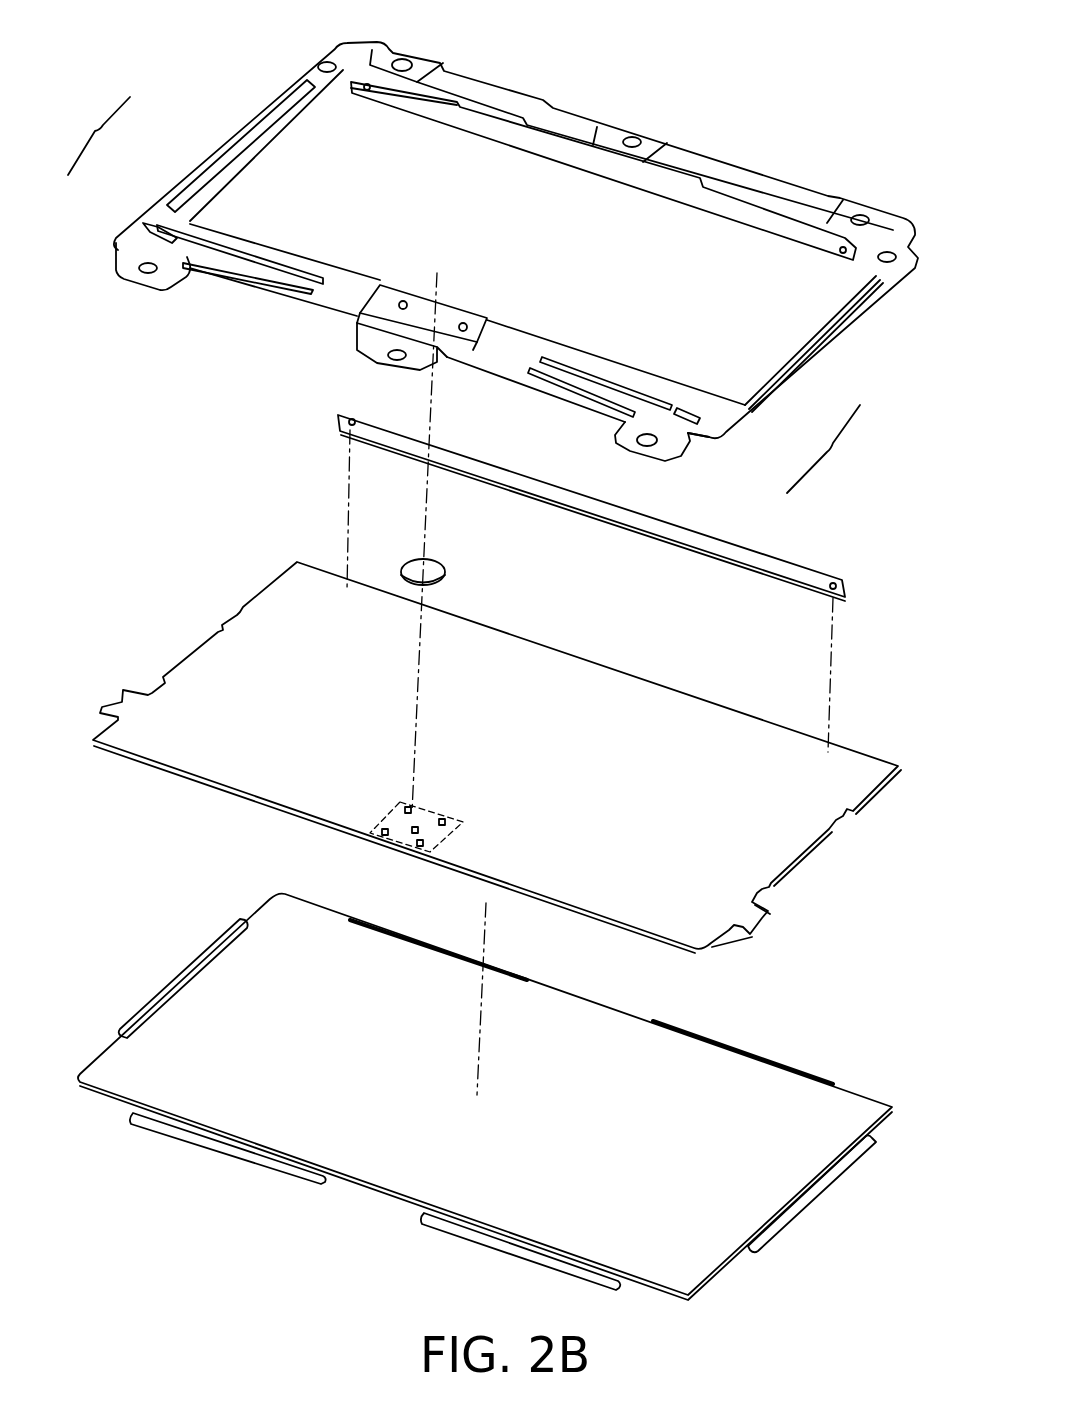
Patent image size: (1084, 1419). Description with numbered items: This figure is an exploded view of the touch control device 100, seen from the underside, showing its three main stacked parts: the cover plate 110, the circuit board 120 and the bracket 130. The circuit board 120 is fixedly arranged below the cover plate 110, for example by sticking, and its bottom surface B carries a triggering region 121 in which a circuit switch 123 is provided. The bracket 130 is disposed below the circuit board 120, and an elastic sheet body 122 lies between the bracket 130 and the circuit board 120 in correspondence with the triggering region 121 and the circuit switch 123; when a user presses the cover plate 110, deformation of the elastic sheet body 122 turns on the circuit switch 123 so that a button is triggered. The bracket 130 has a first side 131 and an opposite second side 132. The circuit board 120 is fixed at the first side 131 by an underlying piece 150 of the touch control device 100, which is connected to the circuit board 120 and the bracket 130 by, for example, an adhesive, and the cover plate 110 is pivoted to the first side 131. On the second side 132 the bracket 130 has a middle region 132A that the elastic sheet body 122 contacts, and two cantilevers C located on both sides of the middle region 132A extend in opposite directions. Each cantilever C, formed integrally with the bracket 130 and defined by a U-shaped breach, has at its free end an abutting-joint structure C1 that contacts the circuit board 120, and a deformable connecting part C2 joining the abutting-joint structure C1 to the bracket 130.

The touch control device 100 is at (929, 1306).
The cover plate 110 is at (423, 1173).
The circuit board 120 is at (516, 757).
The triggering region 121 is at (377, 810).
The elastic sheet body 122 is at (433, 557).
The circuit switch 123 is at (408, 833).
The bracket 130 is at (505, 246).
The first side 131 is at (430, 47).
The second side 132 is at (464, 286).
The middle region 132A is at (330, 320).
The underlying piece 150 is at (794, 568).
The bottom surface B is at (220, 663).
The cantilever C is at (464, 295).
The abutting-joint structure C1 is at (157, 230).
The connecting part C2 is at (240, 257).